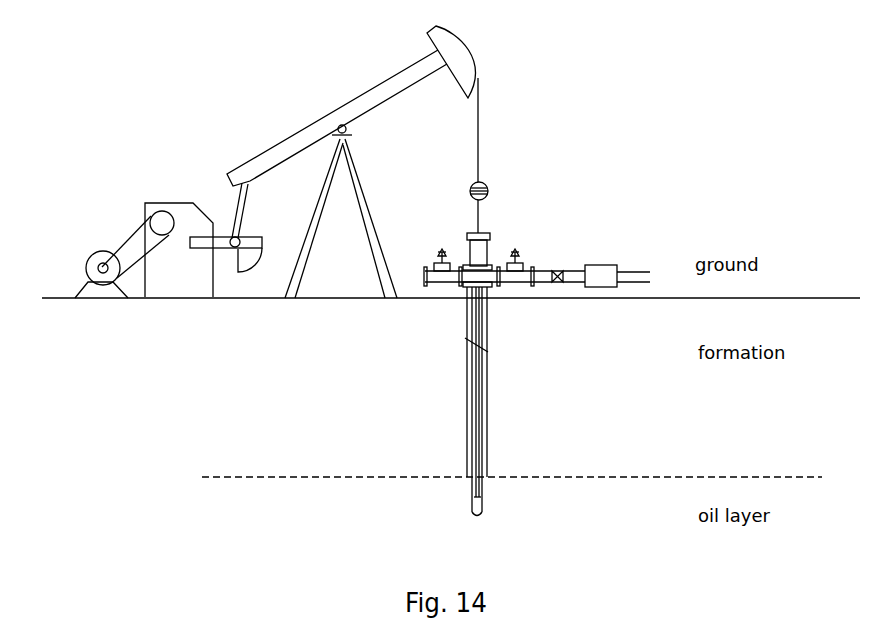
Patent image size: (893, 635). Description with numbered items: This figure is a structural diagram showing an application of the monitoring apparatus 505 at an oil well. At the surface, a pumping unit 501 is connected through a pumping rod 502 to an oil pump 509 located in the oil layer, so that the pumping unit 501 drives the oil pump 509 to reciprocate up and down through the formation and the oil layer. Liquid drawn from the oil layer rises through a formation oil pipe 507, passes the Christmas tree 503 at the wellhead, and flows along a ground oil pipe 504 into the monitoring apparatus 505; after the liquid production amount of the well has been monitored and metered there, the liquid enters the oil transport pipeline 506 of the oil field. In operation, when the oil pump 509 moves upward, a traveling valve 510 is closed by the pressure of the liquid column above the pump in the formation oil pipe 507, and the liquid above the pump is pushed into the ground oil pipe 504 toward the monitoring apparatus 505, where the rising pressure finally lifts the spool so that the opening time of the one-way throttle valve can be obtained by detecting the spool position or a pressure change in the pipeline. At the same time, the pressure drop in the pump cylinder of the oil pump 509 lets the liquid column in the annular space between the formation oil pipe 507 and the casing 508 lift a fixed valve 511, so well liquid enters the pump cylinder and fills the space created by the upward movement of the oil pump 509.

The pumping unit 501 is at (478, 82).
The pumping rod 502 is at (485, 213).
The Christmas tree 503 is at (488, 252).
The ground oil pipe 504 is at (553, 272).
The monitoring apparatus 505 is at (597, 265).
The oil transport pipeline 506 is at (643, 272).
The formation oil pipe 507 is at (488, 367).
The casing 508 is at (487, 427).
The oil pump 509 is at (481, 465).
The traveling valve 510 is at (482, 494).
The fixed valve 511 is at (473, 514).